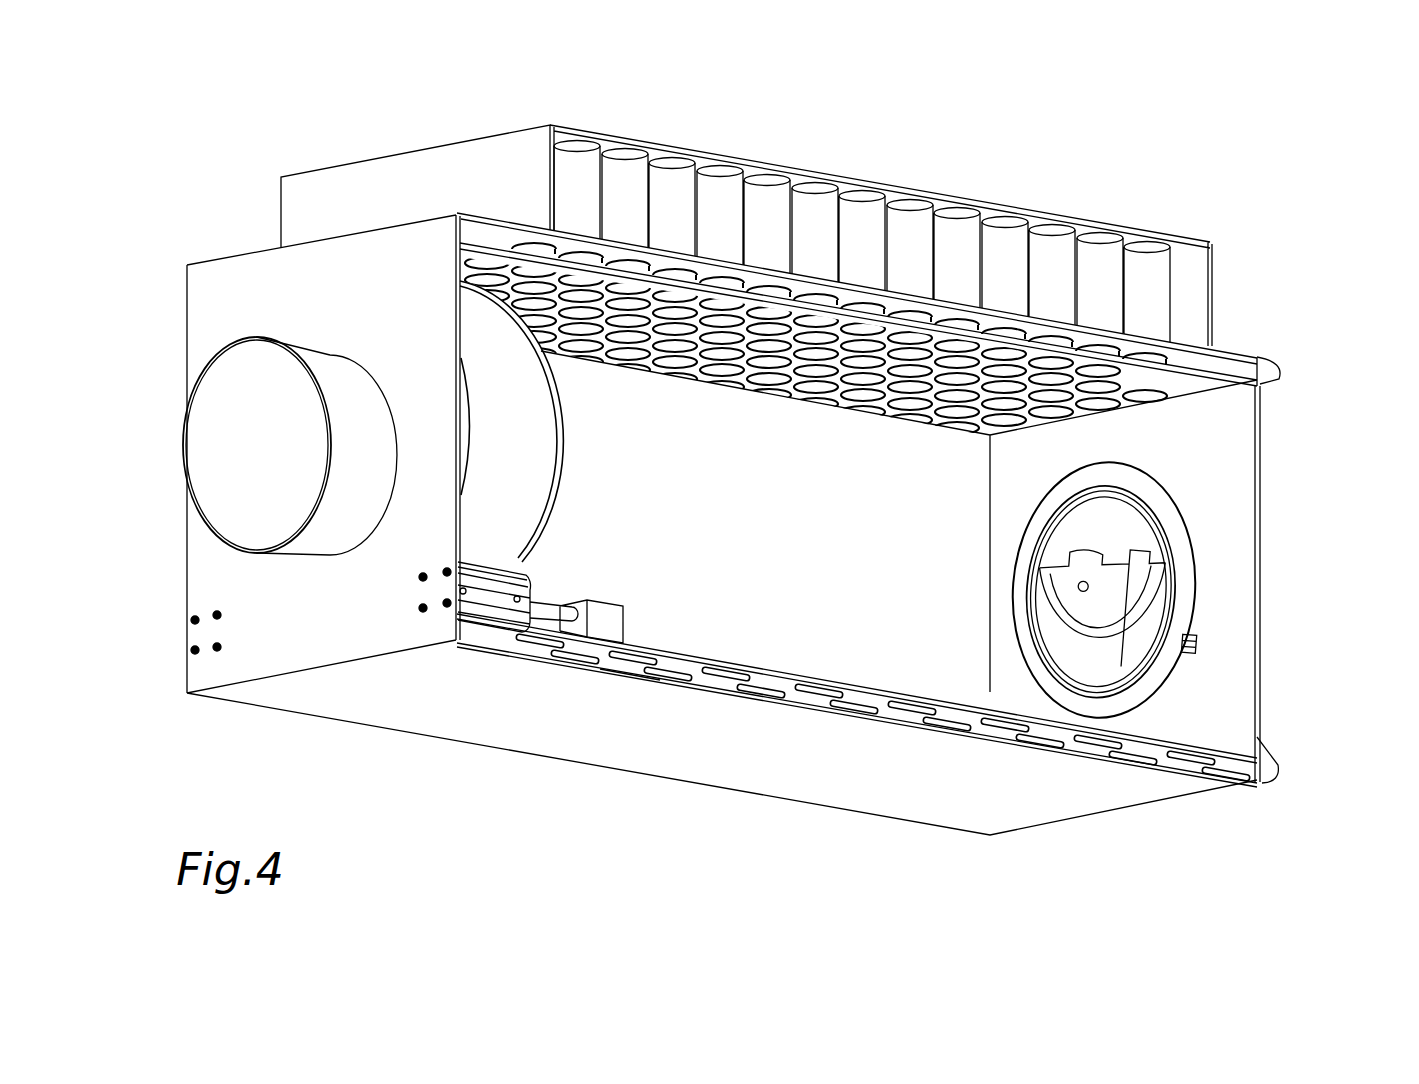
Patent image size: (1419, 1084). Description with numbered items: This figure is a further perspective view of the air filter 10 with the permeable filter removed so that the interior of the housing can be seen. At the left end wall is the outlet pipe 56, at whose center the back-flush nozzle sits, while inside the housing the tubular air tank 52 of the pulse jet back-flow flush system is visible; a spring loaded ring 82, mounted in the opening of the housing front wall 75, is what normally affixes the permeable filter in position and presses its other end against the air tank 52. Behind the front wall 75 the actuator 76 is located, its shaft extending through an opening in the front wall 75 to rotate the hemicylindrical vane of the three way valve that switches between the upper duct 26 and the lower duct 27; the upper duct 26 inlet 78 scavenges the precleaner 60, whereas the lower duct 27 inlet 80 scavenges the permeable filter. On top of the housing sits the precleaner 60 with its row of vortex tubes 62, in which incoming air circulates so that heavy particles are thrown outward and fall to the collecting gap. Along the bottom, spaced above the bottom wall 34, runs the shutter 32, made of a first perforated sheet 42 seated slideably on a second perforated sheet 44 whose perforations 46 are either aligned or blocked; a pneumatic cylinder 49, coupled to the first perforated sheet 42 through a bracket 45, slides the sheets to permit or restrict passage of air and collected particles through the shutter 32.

The air filter 10 is at (1341, 135).
The upper duct 26 is at (1262, 402).
The lower duct 27 is at (1280, 760).
The shutter 32 is at (763, 682).
The bottom wall 34 is at (625, 675).
The first perforated sheet 42 is at (877, 690).
The second perforated sheet 44 is at (820, 682).
The bracket 45 is at (610, 612).
The perforations 46 is at (1177, 755).
The pneumatic cylinder 49 is at (528, 588).
The air tank 52 is at (550, 470).
The outlet pipe 56 is at (195, 458).
The precleaner 60 is at (453, 150).
The vortex tubes 62 is at (907, 225).
The front wall 75 is at (1240, 548).
The actuator 76 is at (1147, 617).
The upper duct inlet 78 is at (1272, 370).
The lower duct inlet 80 is at (1263, 785).
The spring loaded ring 82 is at (1185, 572).